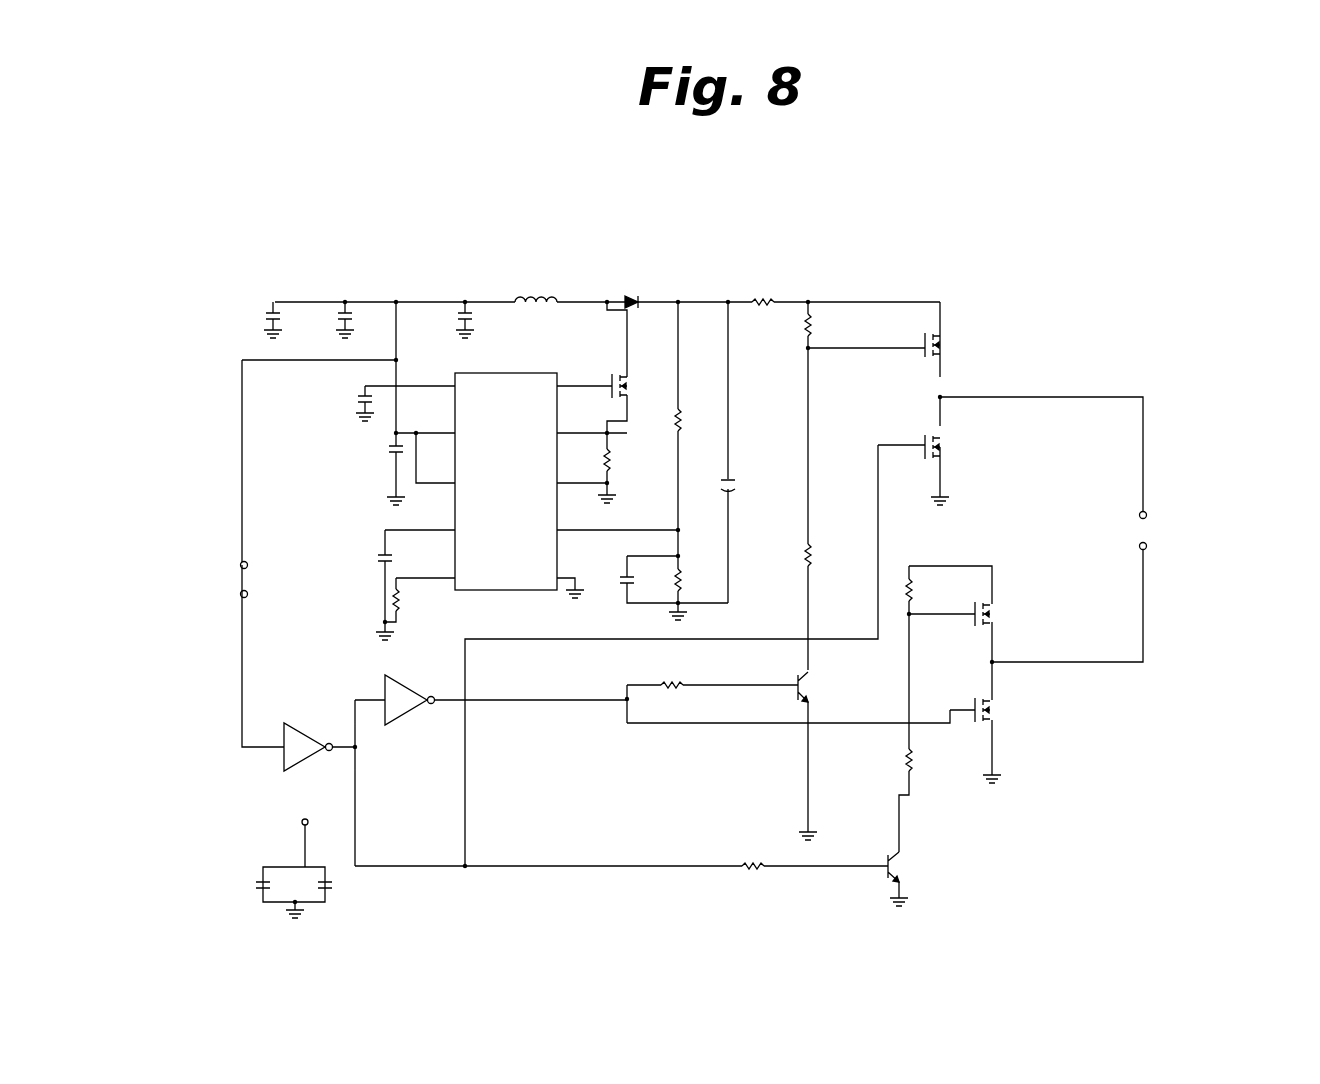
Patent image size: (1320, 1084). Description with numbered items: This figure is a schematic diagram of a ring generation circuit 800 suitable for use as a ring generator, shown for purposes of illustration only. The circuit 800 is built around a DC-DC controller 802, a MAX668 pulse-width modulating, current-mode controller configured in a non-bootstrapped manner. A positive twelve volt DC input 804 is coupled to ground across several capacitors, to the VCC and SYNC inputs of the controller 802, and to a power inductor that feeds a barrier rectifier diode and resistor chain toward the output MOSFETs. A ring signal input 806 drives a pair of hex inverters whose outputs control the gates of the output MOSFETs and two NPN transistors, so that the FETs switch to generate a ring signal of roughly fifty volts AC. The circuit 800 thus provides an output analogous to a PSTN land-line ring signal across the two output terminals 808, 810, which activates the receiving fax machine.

The circuit 800 is at (478, 240).
The DC-DC controller 802 is at (468, 508).
The +12V DC input 804 is at (243, 562).
The ring signal input 806 is at (243, 597).
The output terminal 808 is at (1146, 512).
The output terminal 810 is at (1146, 549).